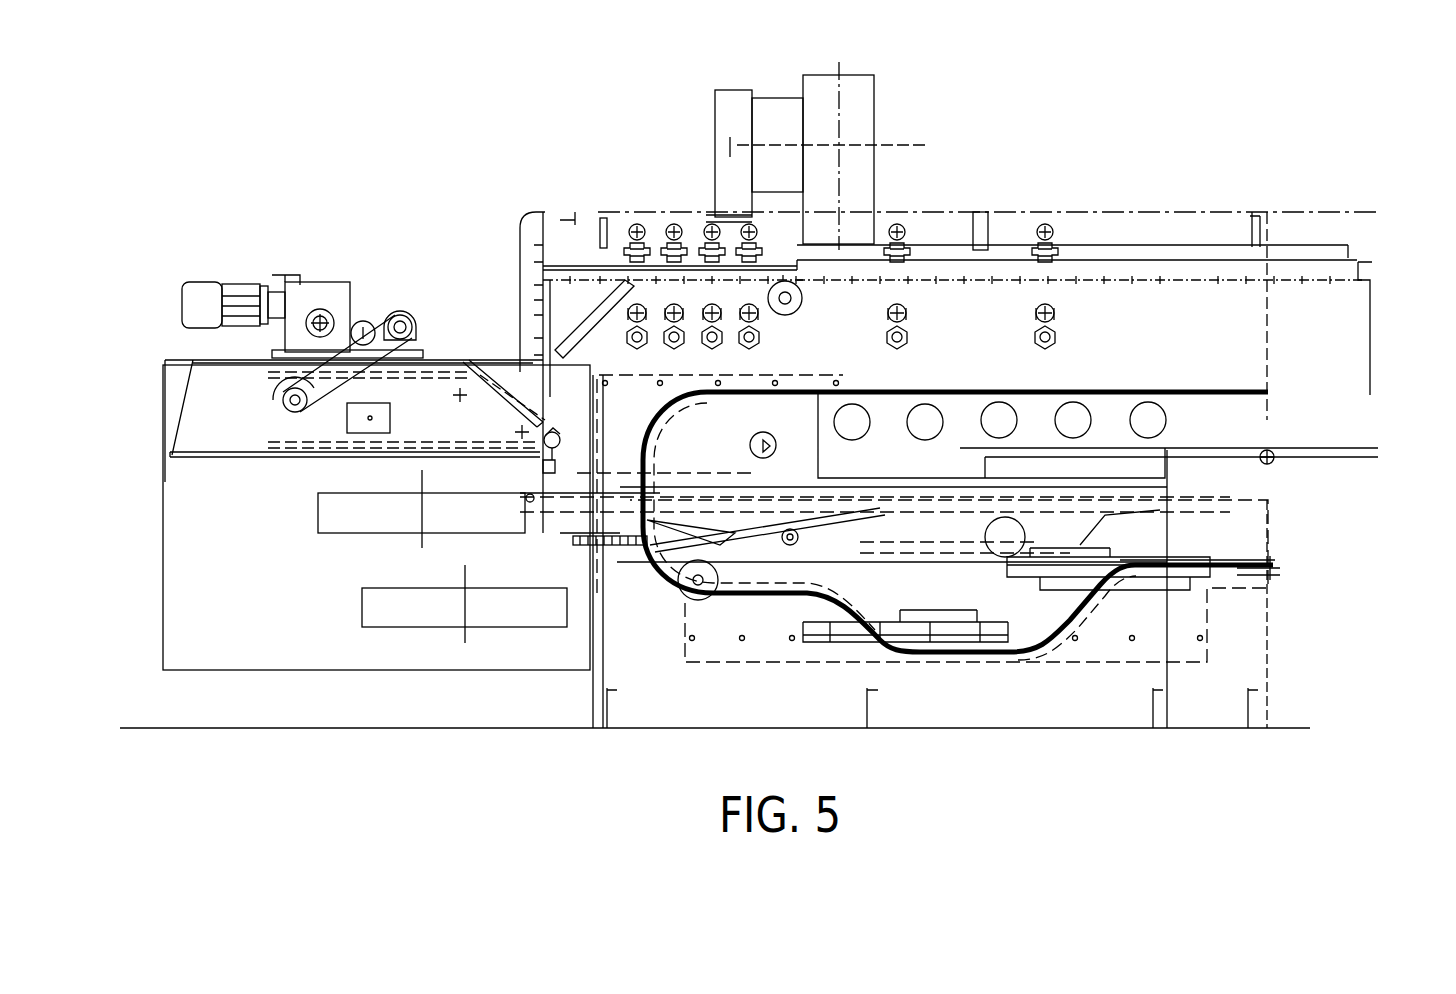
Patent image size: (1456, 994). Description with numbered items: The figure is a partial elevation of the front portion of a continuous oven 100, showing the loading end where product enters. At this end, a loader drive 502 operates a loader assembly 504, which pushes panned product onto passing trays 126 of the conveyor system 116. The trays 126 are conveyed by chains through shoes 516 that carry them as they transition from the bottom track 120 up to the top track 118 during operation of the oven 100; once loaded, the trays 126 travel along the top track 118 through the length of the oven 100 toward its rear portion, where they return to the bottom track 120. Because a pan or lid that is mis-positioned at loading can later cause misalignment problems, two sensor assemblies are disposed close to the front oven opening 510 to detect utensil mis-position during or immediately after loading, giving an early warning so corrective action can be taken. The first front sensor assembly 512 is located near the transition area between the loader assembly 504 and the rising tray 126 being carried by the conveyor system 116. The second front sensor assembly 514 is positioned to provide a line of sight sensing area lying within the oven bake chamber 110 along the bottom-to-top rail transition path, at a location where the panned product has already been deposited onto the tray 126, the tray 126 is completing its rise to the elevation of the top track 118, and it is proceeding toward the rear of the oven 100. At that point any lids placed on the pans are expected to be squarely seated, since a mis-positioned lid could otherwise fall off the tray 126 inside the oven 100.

The oven 100 is at (1240, 148).
The oven bake chamber 110 is at (1368, 345).
The conveyor system 116 is at (1343, 506).
The top track 118 is at (1240, 395).
The bottom track 120 is at (1237, 568).
The tray 126 is at (1197, 550).
The loader drive 502 is at (206, 280).
The loader assembly 504 is at (482, 392).
The front oven opening 510 is at (149, 463).
The first front sensor assembly 512 is at (564, 425).
The second front sensor assembly 514 is at (765, 458).
The shoe 516 is at (665, 577).